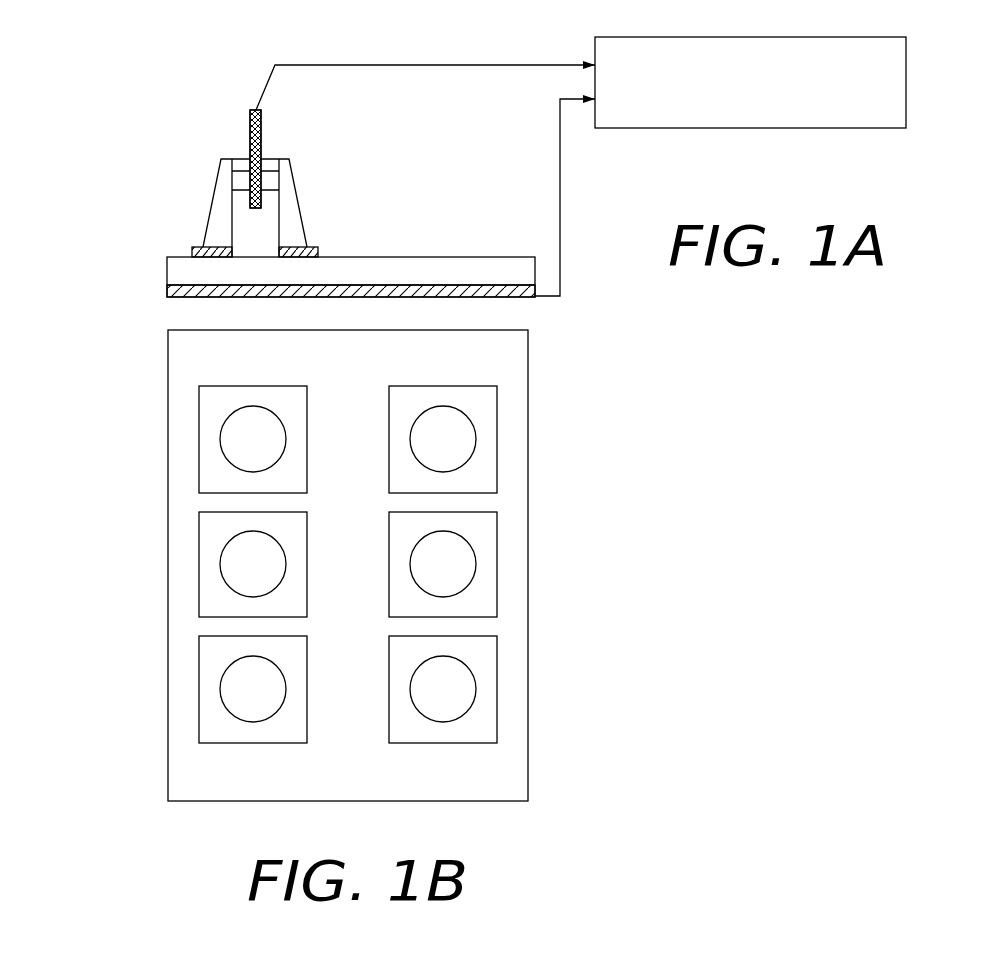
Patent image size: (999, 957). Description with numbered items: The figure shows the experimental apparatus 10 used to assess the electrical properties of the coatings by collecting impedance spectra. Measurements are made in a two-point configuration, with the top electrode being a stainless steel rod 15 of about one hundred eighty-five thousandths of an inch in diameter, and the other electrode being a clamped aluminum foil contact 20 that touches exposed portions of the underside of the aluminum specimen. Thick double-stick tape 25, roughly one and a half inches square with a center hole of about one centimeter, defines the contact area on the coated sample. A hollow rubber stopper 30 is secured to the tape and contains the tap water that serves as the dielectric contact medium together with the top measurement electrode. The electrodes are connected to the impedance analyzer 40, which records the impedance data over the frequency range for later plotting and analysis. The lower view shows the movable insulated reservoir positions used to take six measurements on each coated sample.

In FIG. 1A, the experimental apparatus 10 is at (242, 227).
In FIG. 1B, the experimental apparatus 10 is at (589, 428).
In FIG. 1A, the stainless steel rod 15 is at (240, 138).
In FIG. 1A, the aluminum foil contact 20 is at (165, 290).
In FIG. 1A, the double-stick tape 25 is at (185, 249).
In FIG. 1A, the hollow rubber stopper 30 is at (298, 195).
In FIG. 1A, the measurement instrument 40 is at (906, 83).